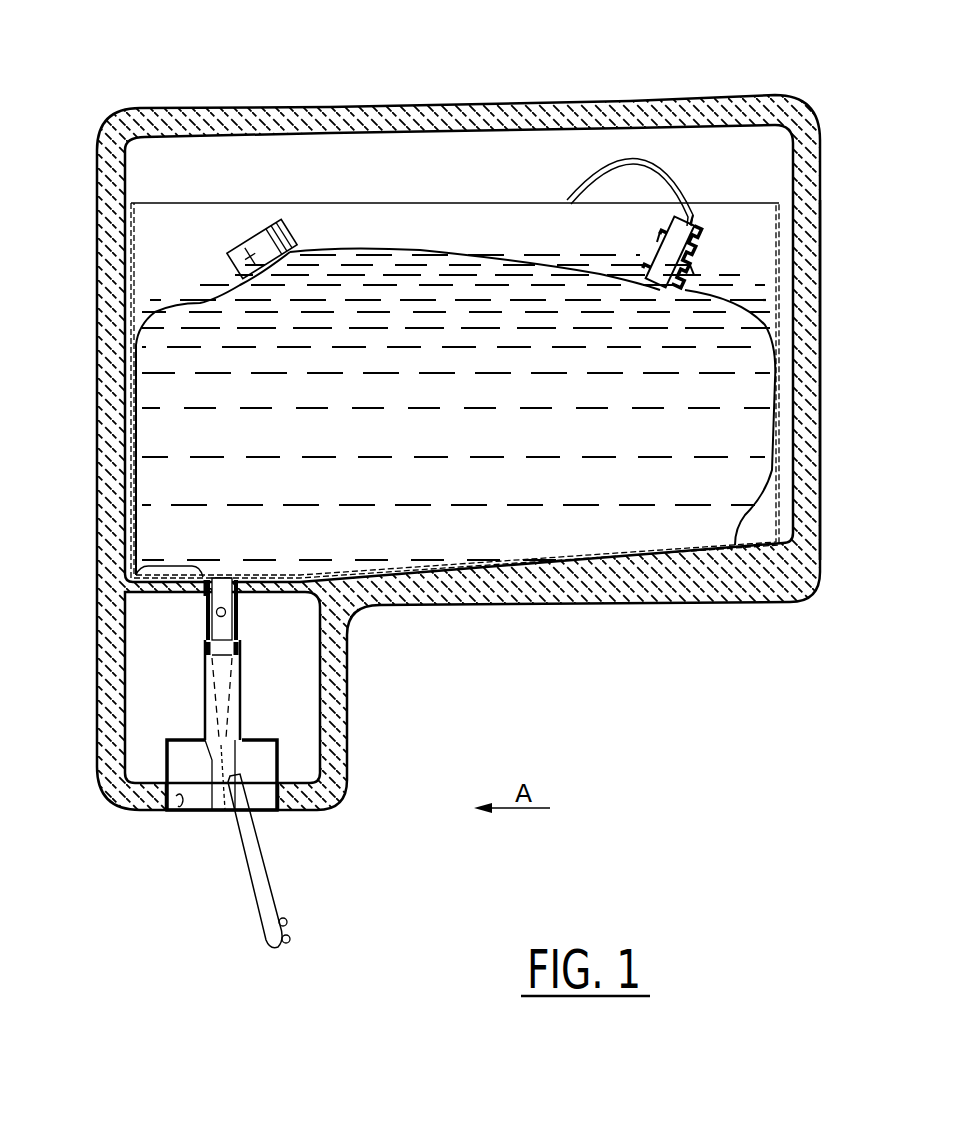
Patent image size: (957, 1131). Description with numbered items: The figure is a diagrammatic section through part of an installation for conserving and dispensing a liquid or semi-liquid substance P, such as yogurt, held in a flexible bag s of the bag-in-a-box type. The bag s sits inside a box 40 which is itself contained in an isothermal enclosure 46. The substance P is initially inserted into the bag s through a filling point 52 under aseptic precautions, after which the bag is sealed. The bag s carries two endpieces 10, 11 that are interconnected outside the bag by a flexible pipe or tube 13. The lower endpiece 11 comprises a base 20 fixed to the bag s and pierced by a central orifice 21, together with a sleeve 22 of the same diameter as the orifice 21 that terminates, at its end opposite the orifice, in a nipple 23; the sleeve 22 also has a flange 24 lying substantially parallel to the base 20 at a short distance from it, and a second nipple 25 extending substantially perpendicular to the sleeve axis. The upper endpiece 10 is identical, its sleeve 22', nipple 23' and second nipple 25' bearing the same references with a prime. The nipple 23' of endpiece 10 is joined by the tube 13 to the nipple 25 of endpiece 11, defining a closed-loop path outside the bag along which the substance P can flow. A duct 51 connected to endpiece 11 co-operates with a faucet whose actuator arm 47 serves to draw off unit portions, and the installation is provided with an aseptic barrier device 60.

The endpiece 10 is at (718, 250).
The endpiece 11 is at (190, 618).
The flexible pipe or tube 13 is at (660, 167).
The base 20 is at (200, 576).
The central orifice 21 is at (222, 577).
The sleeve 22 is at (191, 624).
The sleeve 22' is at (624, 232).
The nipple 23 is at (194, 690).
The nipple 23' is at (730, 183).
The flange 24 is at (202, 595).
The second nipple 25 is at (260, 625).
The second nipple 25' is at (728, 284).
The box 40 is at (128, 258).
The isothermal enclosure 46 is at (812, 318).
The actuator arm 47 is at (260, 875).
The duct 51 is at (233, 692).
The filling point 52 is at (228, 266).
The aseptic barrier device 60 is at (208, 832).
The liquid or semi-liquid substance P is at (748, 478).
The flexible bag s is at (378, 250).